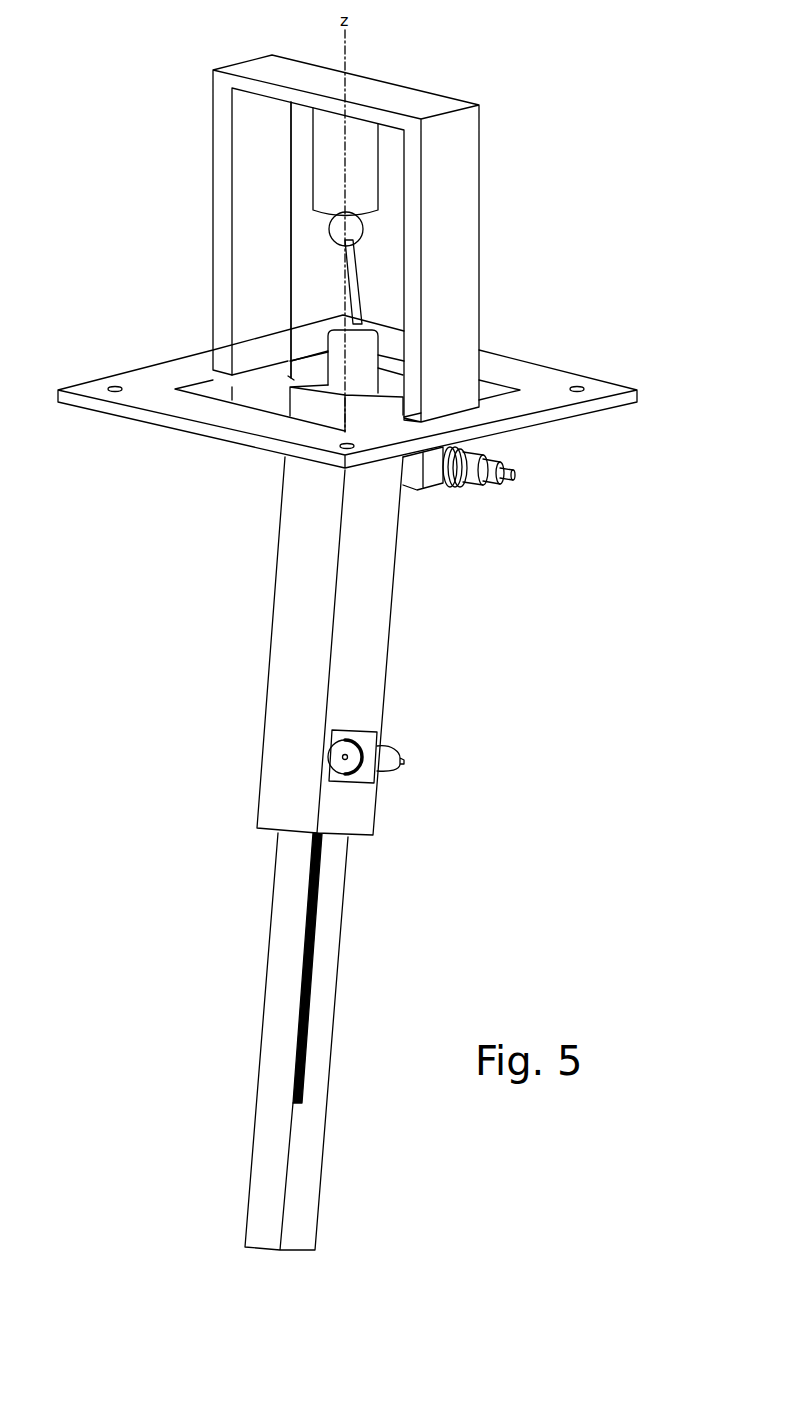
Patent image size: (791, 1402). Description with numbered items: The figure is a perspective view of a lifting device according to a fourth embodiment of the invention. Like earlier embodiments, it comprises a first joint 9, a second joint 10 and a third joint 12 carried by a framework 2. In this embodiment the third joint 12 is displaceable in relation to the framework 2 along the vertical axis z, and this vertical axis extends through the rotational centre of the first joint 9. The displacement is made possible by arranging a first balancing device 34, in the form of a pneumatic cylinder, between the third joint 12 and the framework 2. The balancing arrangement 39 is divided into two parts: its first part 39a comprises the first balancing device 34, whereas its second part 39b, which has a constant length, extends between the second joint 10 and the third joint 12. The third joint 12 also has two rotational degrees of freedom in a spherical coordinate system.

The framework 2 is at (427, 78).
The first joint 9 is at (335, 417).
The second joint 10 is at (367, 326).
The third joint 12 is at (363, 238).
The first balancing device 34 is at (333, 172).
The balancing arrangement 39 is at (351, 241).
The first part of the balancing arrangement 39a is at (305, 143).
The second part of the balancing arrangement 39b is at (337, 276).